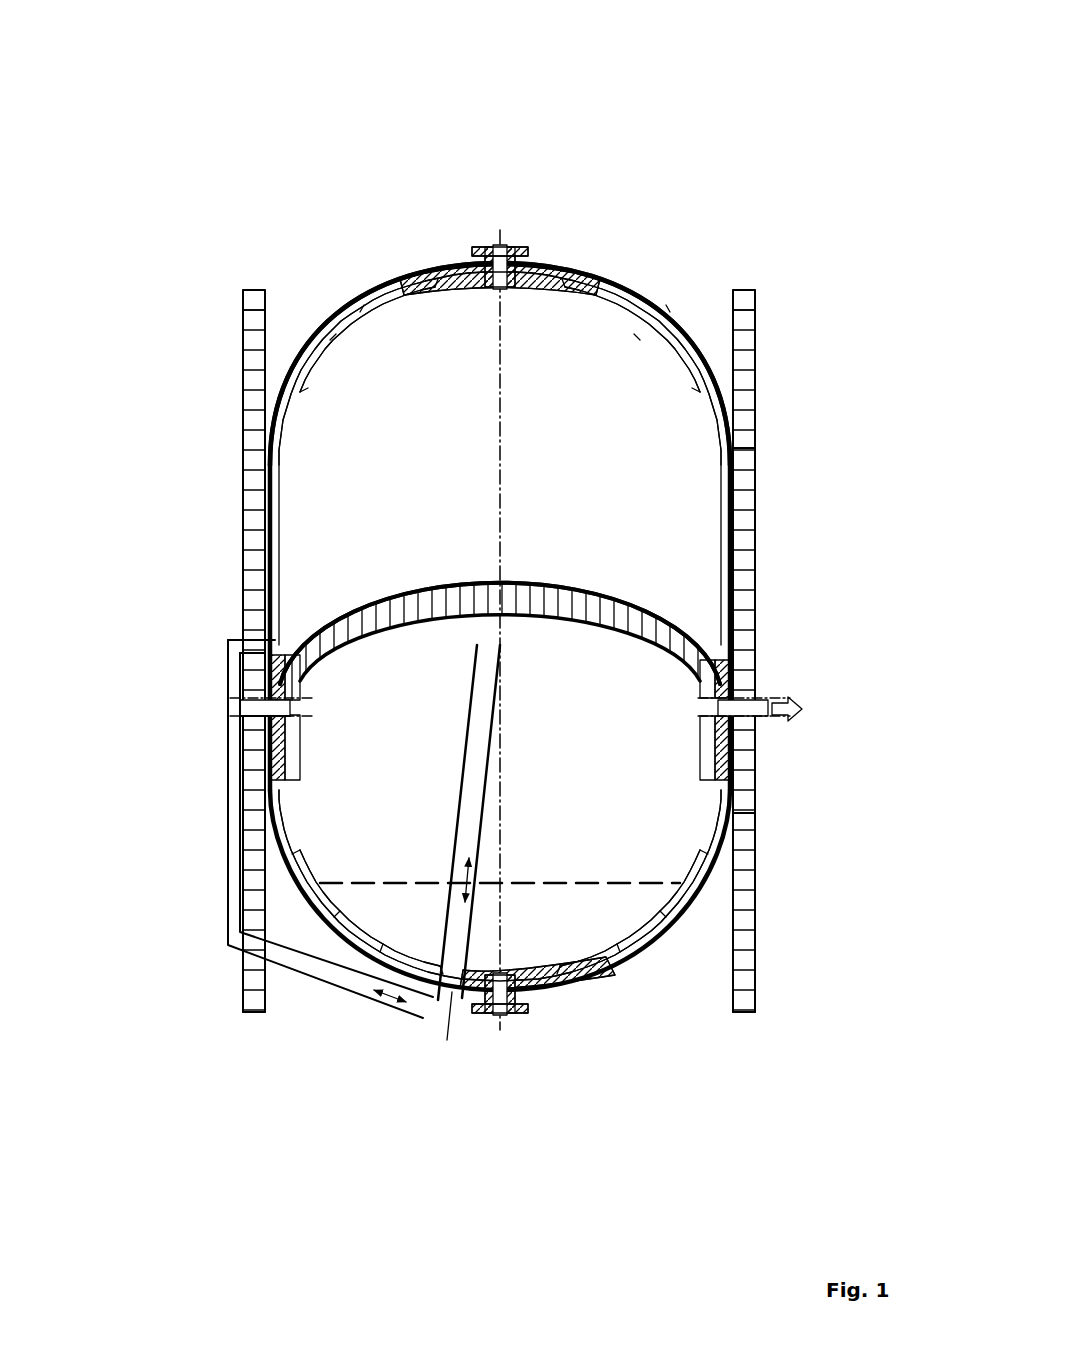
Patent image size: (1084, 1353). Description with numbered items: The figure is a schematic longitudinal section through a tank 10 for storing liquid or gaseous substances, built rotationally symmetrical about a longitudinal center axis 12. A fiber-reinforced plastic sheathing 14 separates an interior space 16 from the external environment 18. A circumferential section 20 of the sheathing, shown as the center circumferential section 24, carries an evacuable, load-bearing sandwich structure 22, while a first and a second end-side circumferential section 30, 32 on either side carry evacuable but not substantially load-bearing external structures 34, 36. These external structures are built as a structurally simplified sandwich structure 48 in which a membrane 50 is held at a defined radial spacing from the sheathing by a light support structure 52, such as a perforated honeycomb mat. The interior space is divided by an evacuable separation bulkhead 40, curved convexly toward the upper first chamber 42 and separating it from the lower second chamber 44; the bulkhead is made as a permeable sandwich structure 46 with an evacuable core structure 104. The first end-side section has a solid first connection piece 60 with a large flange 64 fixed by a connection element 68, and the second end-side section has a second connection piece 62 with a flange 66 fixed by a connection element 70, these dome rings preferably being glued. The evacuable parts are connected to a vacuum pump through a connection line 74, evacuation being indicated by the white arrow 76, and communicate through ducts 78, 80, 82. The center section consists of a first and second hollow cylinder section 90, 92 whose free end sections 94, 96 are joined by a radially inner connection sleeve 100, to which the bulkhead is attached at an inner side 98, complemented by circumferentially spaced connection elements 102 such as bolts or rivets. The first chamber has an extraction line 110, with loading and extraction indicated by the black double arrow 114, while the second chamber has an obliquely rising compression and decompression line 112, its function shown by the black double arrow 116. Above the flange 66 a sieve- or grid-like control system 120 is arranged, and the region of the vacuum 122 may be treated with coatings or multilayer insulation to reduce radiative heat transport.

The tank 10 is at (378, 160).
The longitudinal center axis 12 is at (518, 247).
The fiber-reinforced plastic sheathing 14 is at (292, 528).
The interior space 16 is at (640, 421).
The external environment 18 is at (220, 1001).
The circumferential section 20 is at (262, 553).
The sandwich structure 22 is at (250, 291).
The center circumferential section 24 is at (748, 555).
The first end-side circumferential section 30 is at (690, 348).
The second end-side circumferential section 32 is at (300, 865).
The external structure 34 is at (608, 278).
The external structure 36 is at (657, 947).
The separation bulkhead 40 is at (620, 600).
The first chamber 42 is at (318, 302).
The second chamber 44 is at (500, 885).
The sandwich structure 46 is at (500, 648).
The structurally simplified sandwich structure 48 is at (507, 628).
The membrane 50 is at (363, 300).
The light support structure 52 is at (565, 278).
The first connection piece 60 is at (545, 273).
The second connection piece 62 is at (520, 1018).
The flange 64 is at (433, 270).
The flange 66 is at (570, 980).
The connection element 68 is at (367, 345).
The connection element 70 is at (340, 955).
The connection line 74 is at (738, 714).
The white arrow 76 is at (805, 711).
The duct 78 is at (733, 448).
The duct 80 is at (733, 813).
The duct 82 is at (270, 703).
The first hollow cylinder section 90 is at (270, 586).
The second hollow cylinder section 92 is at (283, 757).
The free end section 94 is at (262, 673).
The free end section 96 is at (262, 722).
The inner side 98 is at (300, 830).
The connection sleeve 100 is at (730, 672).
The connection elements 102 is at (300, 698).
The evacuable core structure 104 is at (568, 590).
The extraction line 110 is at (228, 947).
The compression and decompression line 112 is at (450, 993).
The black double arrow 114 is at (380, 1000).
The black double arrow 116 is at (465, 878).
The control system 120 is at (593, 977).
The vacuum 122 is at (395, 292).